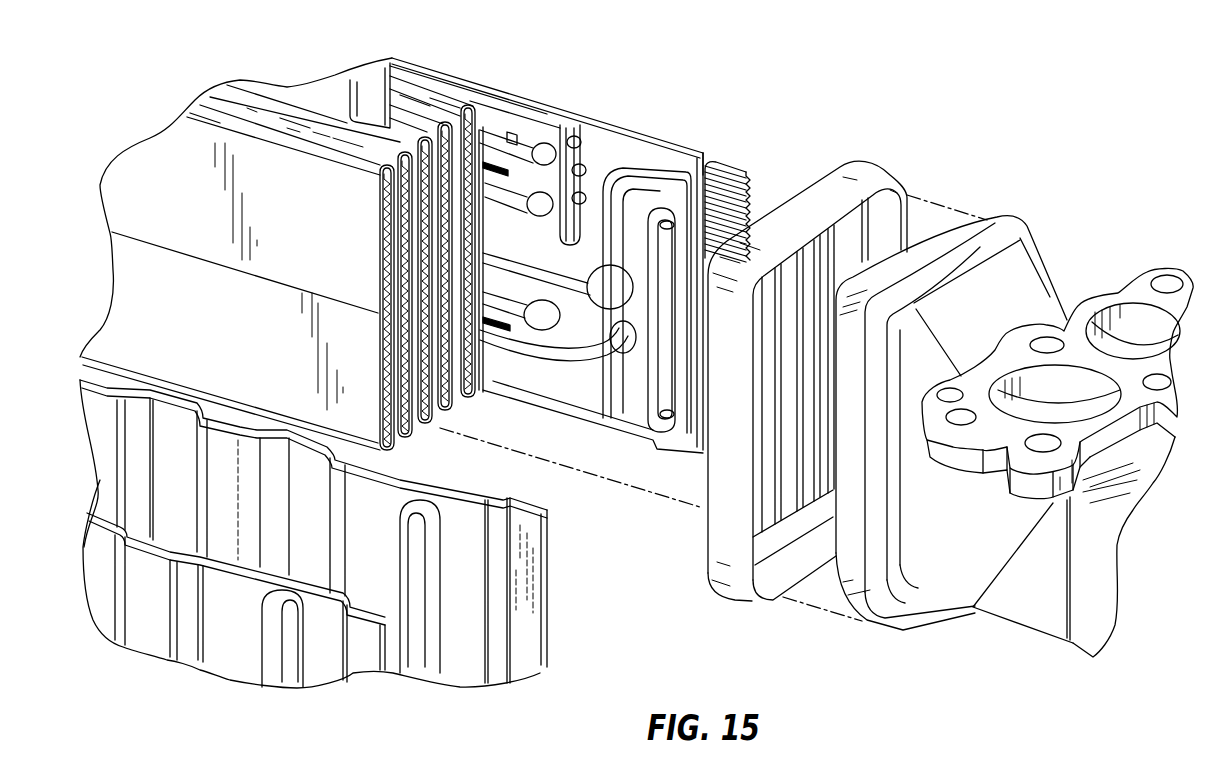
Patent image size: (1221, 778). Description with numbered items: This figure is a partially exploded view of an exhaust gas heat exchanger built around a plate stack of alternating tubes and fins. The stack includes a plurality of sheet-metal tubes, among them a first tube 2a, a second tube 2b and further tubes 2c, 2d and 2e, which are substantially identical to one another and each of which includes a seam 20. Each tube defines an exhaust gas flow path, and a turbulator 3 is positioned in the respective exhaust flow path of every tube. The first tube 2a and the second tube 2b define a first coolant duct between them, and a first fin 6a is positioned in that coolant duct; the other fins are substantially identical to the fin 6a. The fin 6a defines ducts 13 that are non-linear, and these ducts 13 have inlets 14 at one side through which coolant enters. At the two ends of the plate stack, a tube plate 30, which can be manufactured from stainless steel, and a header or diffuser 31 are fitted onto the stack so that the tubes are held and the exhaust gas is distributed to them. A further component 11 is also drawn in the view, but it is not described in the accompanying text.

The seam 20 is at (157, 243).
The first tube 2a is at (708, 168).
The second tube 2b is at (447, 110).
The tube 2c is at (415, 118).
The tube 2d is at (303, 118).
The tube 2e is at (262, 131).
The turbulator 3 is at (486, 108).
The first fin 6a is at (600, 163).
The ducts 13 is at (550, 360).
The inlets 14 is at (627, 352).
The tube plate 30 is at (713, 565).
The header or diffuser 31 is at (937, 622).
The lower plate 11 is at (467, 653).